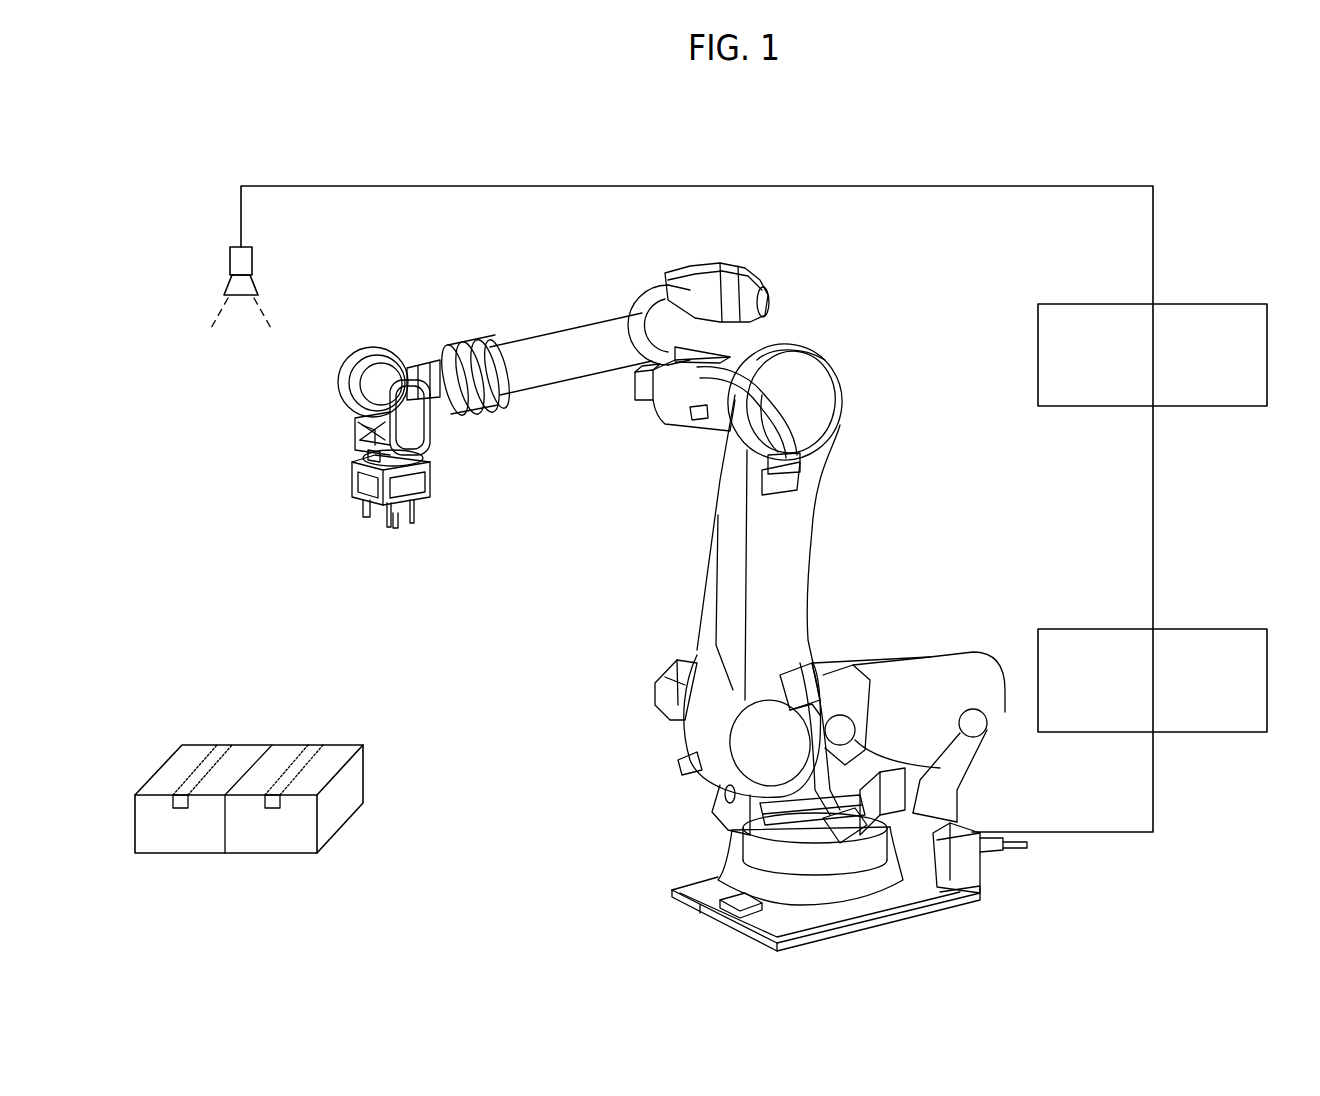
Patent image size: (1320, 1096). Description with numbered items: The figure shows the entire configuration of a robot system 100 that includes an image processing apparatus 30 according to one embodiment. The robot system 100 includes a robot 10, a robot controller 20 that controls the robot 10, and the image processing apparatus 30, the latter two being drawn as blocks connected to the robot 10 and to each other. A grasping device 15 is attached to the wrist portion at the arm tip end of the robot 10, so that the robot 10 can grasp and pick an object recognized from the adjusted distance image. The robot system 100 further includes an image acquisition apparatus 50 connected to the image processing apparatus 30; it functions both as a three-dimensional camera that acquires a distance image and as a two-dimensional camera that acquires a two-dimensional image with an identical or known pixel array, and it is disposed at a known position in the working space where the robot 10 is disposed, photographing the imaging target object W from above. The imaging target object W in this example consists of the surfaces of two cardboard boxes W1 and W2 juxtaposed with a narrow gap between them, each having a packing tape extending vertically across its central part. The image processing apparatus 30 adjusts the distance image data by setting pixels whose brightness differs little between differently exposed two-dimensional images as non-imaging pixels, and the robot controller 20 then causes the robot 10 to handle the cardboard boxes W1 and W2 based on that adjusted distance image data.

The robot system 100 is at (1096, 166).
The robot 10 is at (829, 368).
The grasping device 15 is at (432, 483).
The robot controller 20 is at (1243, 733).
The image processing apparatus 30 is at (1243, 407).
The image acquisition apparatus 50 is at (283, 271).
The imaging target object W is at (249, 773).
The cardboard box W1 is at (157, 855).
The cardboard box W2 is at (298, 855).